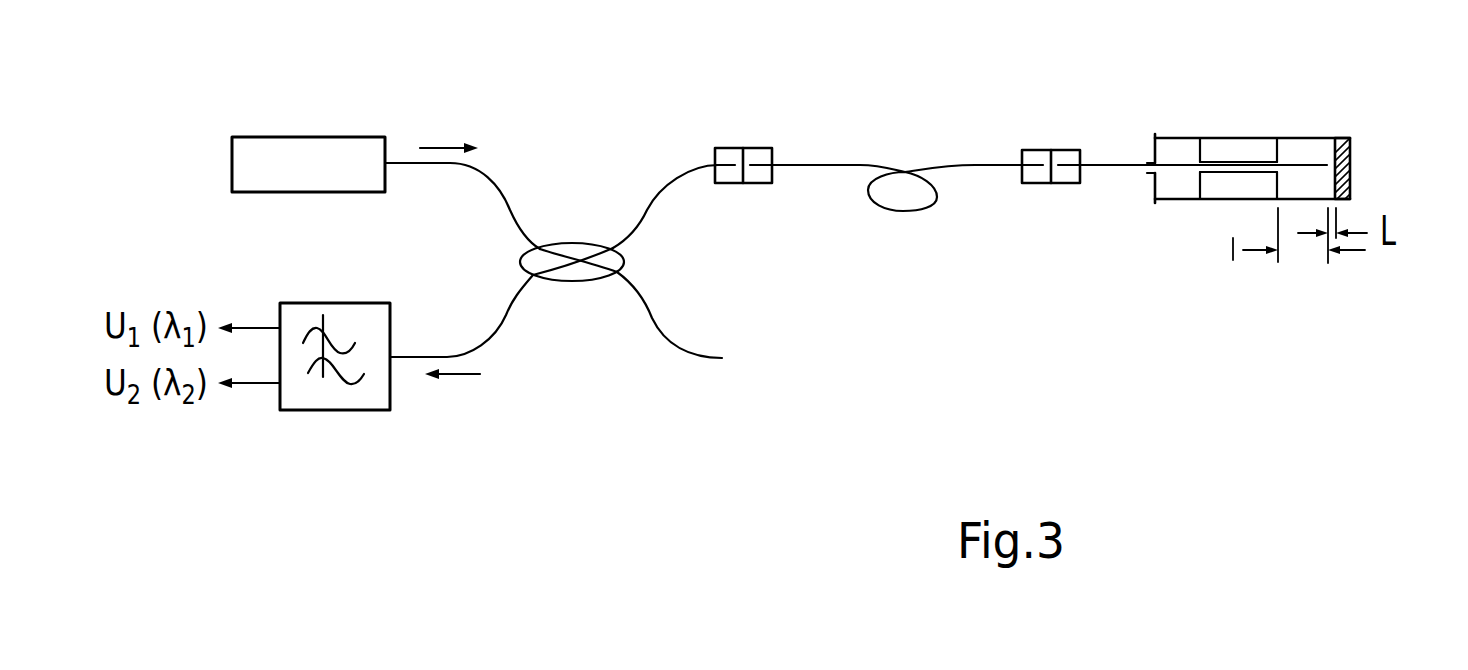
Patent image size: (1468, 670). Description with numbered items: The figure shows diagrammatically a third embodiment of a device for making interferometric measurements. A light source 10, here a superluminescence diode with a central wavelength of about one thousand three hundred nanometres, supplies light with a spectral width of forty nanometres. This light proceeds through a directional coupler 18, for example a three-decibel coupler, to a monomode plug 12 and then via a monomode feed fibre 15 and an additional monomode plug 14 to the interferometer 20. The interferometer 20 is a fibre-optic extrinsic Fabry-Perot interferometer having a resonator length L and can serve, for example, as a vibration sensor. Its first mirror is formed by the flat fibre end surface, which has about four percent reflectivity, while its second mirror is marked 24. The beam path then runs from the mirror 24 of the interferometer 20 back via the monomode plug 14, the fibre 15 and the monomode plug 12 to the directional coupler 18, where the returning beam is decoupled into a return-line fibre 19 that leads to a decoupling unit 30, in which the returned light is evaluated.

The light source 10 is at (300, 137).
The monomode plug 12 is at (742, 145).
The additional monomode plug 14 is at (1040, 143).
The monomode feed fibre 15 is at (835, 163).
The directional coupler 18 is at (567, 240).
The return-line fibre 19 is at (500, 330).
The interferometer 20 is at (1238, 135).
The second mirror 24 is at (1350, 168).
The decoupling unit 30 is at (365, 412).